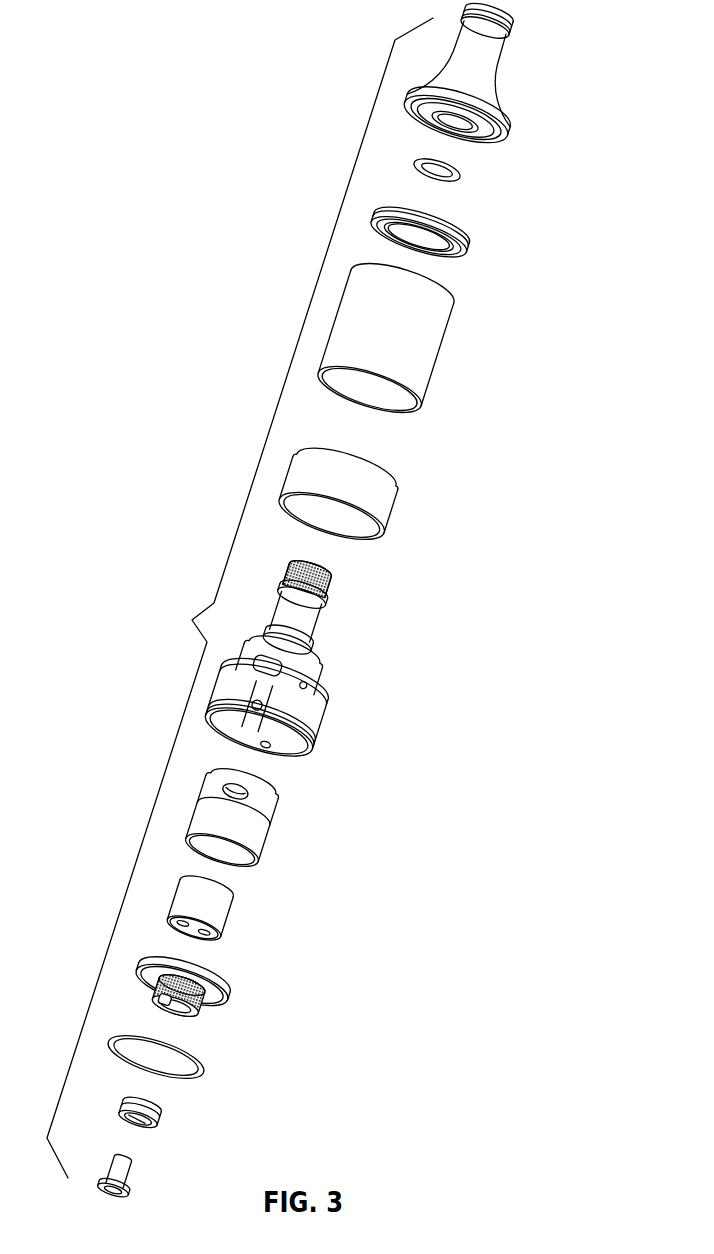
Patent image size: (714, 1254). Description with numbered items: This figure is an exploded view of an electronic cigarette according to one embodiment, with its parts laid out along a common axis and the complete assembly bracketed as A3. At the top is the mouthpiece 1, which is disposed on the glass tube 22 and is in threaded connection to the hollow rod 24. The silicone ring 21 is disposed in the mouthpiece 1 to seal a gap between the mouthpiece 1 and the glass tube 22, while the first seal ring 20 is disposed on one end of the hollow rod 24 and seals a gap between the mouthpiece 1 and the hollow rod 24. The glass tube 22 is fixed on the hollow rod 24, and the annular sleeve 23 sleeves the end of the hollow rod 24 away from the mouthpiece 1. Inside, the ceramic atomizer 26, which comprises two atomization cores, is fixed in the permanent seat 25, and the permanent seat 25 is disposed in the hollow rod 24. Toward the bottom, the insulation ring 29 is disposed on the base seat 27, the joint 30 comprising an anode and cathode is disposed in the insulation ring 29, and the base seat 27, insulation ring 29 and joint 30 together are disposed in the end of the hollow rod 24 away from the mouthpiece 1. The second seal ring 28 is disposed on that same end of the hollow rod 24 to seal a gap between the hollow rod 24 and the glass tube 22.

The mouthpiece 1 is at (497, 70).
The first seal ring 20 is at (465, 177).
The silicone ring 21 is at (472, 242).
The glass tube 22 is at (447, 358).
The annular sleeve 23 is at (390, 500).
The hollow rod 24 is at (337, 667).
The permanent seat 25 is at (277, 803).
The ceramic atomizer 26 is at (212, 883).
The base seat 27 is at (227, 988).
The second seal ring 28 is at (205, 1063).
The insulation ring 29 is at (158, 1117).
The joint 30 is at (138, 1175).
The atomizer assembly A3 is at (240, 598).